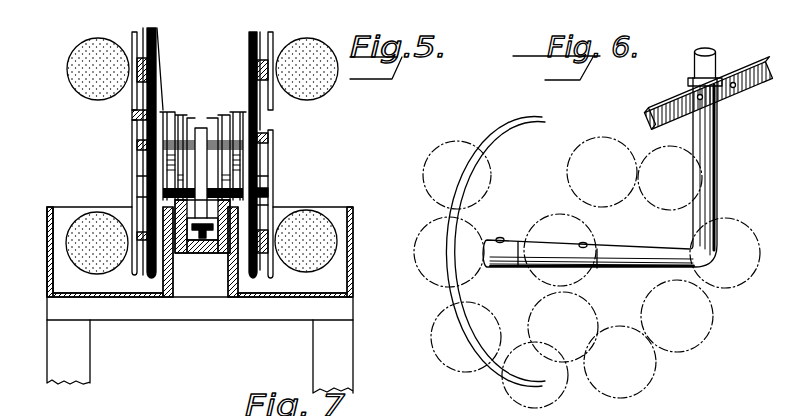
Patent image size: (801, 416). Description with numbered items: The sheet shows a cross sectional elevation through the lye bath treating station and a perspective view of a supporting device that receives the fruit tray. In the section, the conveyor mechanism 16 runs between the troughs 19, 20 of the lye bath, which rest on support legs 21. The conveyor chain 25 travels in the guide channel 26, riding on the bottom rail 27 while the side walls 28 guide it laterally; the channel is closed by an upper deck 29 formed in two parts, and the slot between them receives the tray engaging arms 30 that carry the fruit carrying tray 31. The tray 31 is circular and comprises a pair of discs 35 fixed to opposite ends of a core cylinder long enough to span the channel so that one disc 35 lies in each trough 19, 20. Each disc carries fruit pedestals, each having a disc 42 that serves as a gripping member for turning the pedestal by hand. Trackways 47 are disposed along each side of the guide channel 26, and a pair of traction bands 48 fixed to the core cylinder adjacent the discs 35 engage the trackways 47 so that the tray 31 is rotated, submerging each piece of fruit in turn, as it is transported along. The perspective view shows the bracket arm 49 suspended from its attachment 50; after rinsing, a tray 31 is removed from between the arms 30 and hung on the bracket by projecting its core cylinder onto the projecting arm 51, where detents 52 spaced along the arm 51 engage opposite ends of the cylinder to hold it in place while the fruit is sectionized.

In FIG. 5, the conveyor mechanism 16 is at (205, 256).
In FIG. 5, the trough 19 is at (354, 215).
In FIG. 5, the trough 20 is at (60, 225).
In FIG. 5, the support leg 21 is at (80, 358).
In FIG. 5, the conveyor chain 25 is at (206, 245).
In FIG. 5, the guide channel 26 is at (262, 205).
In FIG. 5, the bottom rail 27 is at (197, 245).
In FIG. 5, the side wall 28 is at (175, 220).
In FIG. 5, the upper deck 29 is at (133, 197).
In FIG. 5, the tray engaging arm 30 is at (200, 128).
In FIG. 5, the fruit carrying tray 31 is at (161, 53).
In FIG. 6, the fruit carrying tray 31 is at (577, 130).
In FIG. 5, the disc 35 is at (150, 27).
In FIG. 5, the disc 42 is at (132, 118).
In FIG. 5, the trackway 47 is at (195, 178).
In FIG. 5, the traction band 48 is at (178, 112).
In FIG. 6, the bracket arm 49 is at (628, 155).
In FIG. 6, the attachment 50 is at (725, 71).
In FIG. 6, the projecting arm 51 is at (630, 250).
In FIG. 6, the detent 52 is at (586, 245).